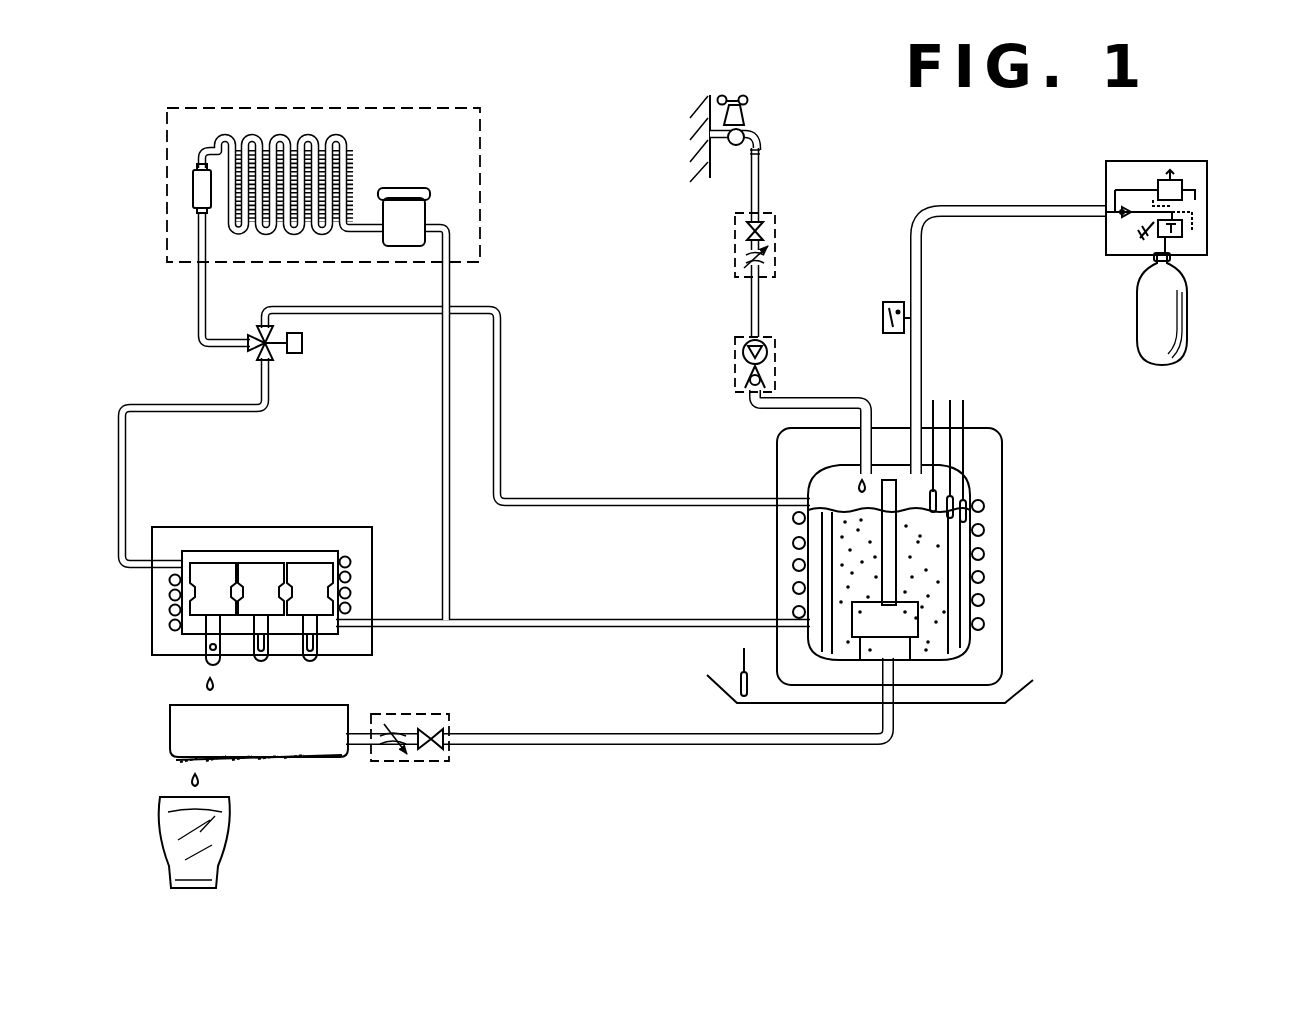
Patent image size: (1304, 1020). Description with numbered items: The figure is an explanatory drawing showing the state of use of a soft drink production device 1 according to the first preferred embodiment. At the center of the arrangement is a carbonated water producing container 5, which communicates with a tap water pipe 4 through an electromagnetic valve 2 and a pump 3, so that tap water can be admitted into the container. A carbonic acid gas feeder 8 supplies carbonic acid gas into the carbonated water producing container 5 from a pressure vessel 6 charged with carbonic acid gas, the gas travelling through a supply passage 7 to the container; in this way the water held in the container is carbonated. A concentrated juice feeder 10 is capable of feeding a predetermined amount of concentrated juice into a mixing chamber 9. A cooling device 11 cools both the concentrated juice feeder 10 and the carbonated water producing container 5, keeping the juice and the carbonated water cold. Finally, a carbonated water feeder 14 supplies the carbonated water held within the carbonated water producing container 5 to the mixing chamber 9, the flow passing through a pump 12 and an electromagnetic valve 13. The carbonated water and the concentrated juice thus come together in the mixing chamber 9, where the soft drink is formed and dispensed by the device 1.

The soft drink production device 1 is at (1192, 798).
The electromagnetic valve 2 is at (772, 228).
The pump 3 is at (772, 357).
The tap water pipe 4 is at (760, 412).
The carbonated water producing container 5 is at (986, 486).
The pressure vessel 6 is at (1184, 340).
The supply passage 7 is at (959, 207).
The carbonic acid gas feeder 8 is at (1213, 200).
The mixing chamber 9 is at (178, 722).
The concentrated juice feeder 10 is at (160, 603).
The cooling device 11 is at (383, 124).
The pump 12 is at (913, 625).
The electromagnetic valve 13 is at (428, 757).
The carbonated water feeder 14 is at (755, 750).